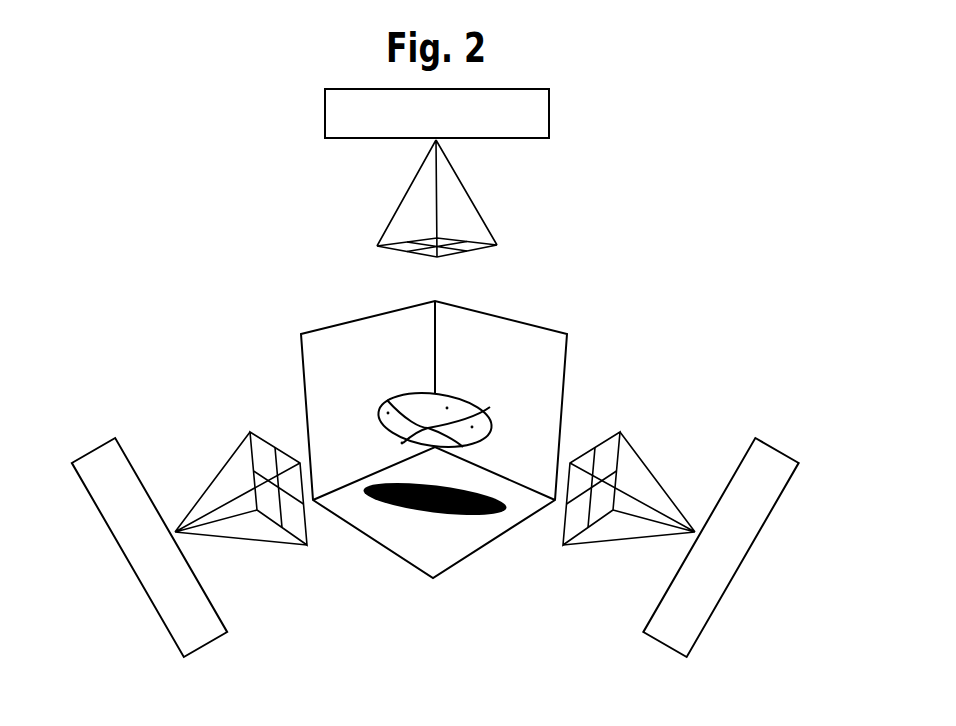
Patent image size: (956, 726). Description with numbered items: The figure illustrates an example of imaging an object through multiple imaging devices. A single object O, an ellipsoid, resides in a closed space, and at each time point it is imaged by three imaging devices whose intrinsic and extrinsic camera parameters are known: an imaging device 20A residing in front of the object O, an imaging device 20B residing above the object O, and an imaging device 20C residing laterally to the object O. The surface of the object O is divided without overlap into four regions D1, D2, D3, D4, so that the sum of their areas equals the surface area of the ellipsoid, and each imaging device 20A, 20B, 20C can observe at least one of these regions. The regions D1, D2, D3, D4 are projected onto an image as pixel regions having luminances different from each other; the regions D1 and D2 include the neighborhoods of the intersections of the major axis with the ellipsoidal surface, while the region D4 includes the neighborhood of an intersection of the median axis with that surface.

The imaging device 20A is at (95, 448).
The imaging device 20B is at (549, 114).
The imaging device 20C is at (773, 448).
The object O is at (480, 410).
The region D1 is at (472, 427).
The region D2 is at (447, 408).
The region D3 is at (388, 413).
The region D4 is at (402, 443).